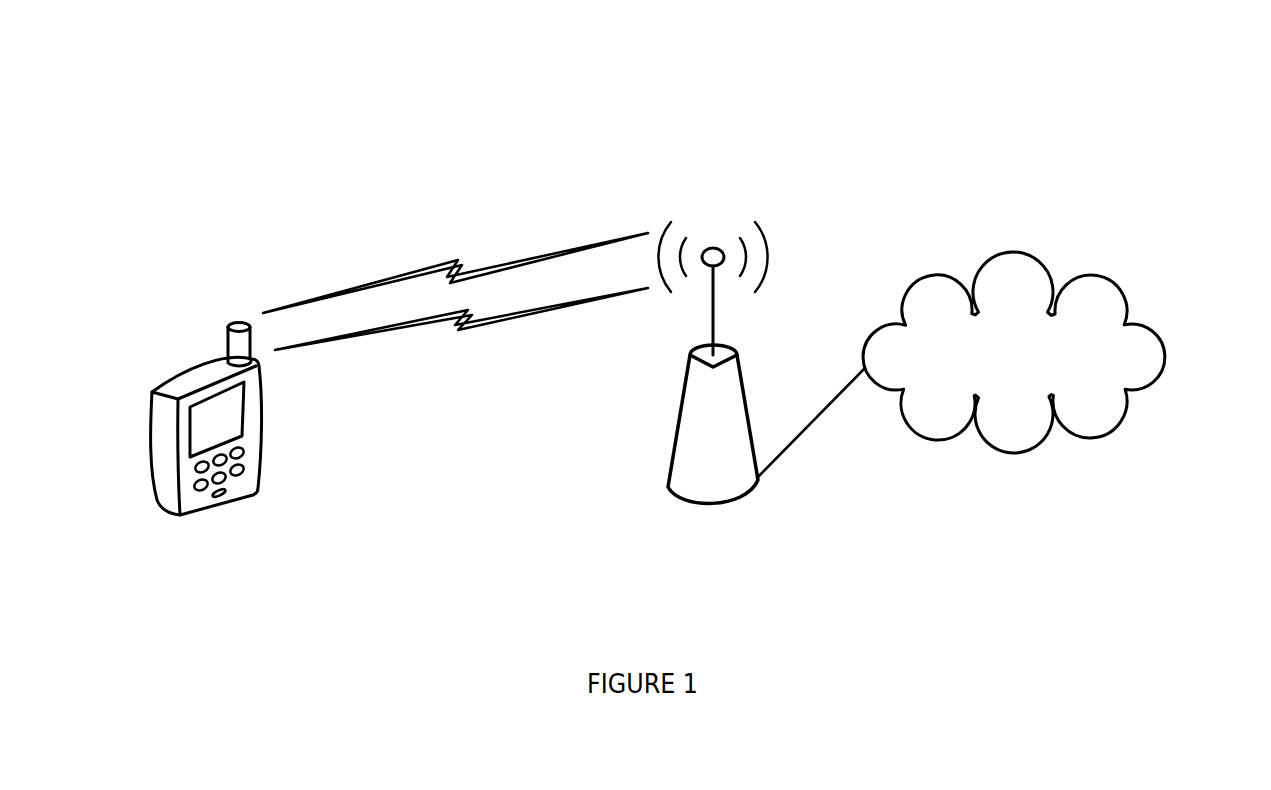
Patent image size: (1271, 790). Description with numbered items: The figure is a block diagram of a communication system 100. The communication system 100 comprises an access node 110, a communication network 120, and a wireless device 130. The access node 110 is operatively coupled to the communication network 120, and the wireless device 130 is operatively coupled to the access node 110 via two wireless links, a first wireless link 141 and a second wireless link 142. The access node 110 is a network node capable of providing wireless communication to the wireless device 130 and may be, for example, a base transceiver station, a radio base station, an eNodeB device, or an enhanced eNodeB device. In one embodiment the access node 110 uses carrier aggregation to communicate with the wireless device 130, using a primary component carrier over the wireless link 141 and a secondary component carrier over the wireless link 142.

The communication system 100 is at (1152, 77).
The access node 110 is at (668, 492).
The communication network 120 is at (1035, 377).
The wireless device 130 is at (183, 515).
The wireless link 141 is at (458, 260).
The wireless link 142 is at (466, 331).